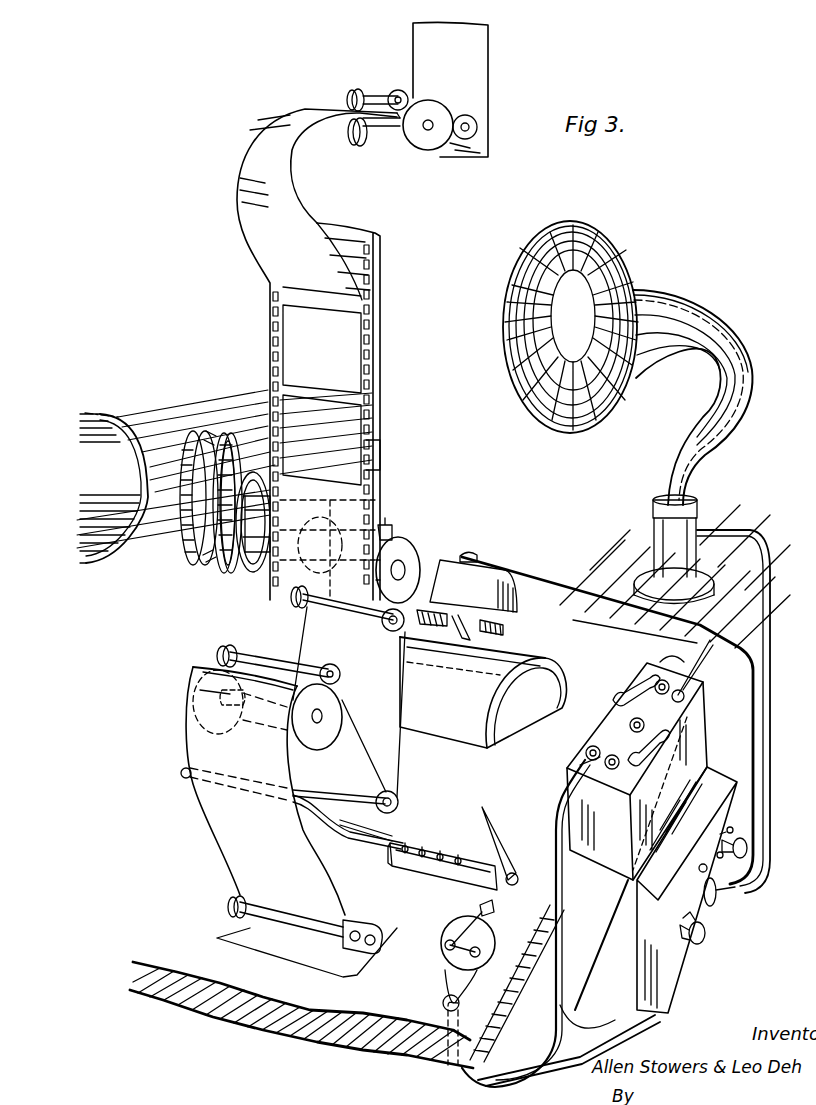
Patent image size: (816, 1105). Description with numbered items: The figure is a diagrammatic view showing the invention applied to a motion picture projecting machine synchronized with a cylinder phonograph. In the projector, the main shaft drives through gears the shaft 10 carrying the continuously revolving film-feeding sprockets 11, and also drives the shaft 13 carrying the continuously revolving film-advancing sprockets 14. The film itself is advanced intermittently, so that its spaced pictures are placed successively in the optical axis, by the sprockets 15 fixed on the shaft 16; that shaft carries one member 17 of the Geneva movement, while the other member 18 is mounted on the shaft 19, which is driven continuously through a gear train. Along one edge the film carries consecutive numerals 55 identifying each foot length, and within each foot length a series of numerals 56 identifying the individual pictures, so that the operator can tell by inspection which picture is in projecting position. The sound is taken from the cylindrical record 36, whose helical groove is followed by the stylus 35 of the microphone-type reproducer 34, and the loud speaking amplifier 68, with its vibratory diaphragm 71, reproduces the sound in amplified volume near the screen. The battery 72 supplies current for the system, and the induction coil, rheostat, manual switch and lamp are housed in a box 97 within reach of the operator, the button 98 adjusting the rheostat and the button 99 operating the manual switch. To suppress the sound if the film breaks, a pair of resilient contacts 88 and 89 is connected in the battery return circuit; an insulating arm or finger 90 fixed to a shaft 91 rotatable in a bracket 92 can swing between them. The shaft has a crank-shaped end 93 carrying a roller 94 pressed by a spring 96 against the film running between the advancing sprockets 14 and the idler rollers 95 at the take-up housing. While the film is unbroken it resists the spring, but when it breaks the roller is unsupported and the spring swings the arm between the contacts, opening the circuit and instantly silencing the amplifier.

The shaft 10 is at (387, 128).
The film-feeding sprockets 11 is at (421, 140).
The shaft 13 is at (321, 722).
The film-advancing sprockets 14 is at (310, 737).
The intermittent sprockets 15 is at (401, 555).
The shaft 16 is at (263, 562).
The Geneva movement member 17 is at (234, 562).
The Geneva movement member 18 is at (193, 555).
The shaft 19 is at (388, 530).
The reproducer 34 is at (479, 583).
The stylus 35 is at (474, 631).
The record 36 is at (483, 692).
The numerals 55 is at (371, 461).
The numerals 56 is at (370, 364).
The loud speaking amplifier 68 is at (750, 383).
The vibratory diaphragm 71 is at (706, 870).
The battery 72 is at (640, 760).
The contact 88 is at (468, 918).
The contact 89 is at (482, 940).
The arm or finger 90 is at (498, 831).
The shaft 91 is at (386, 834).
The bracket 92 is at (441, 869).
The crank-shaped end 93 is at (311, 805).
The roller 94 is at (296, 797).
The idler rollers 95 is at (346, 924).
The spring 96 is at (424, 849).
The box 97 is at (716, 906).
The button 98 is at (757, 878).
The button 99 is at (698, 946).